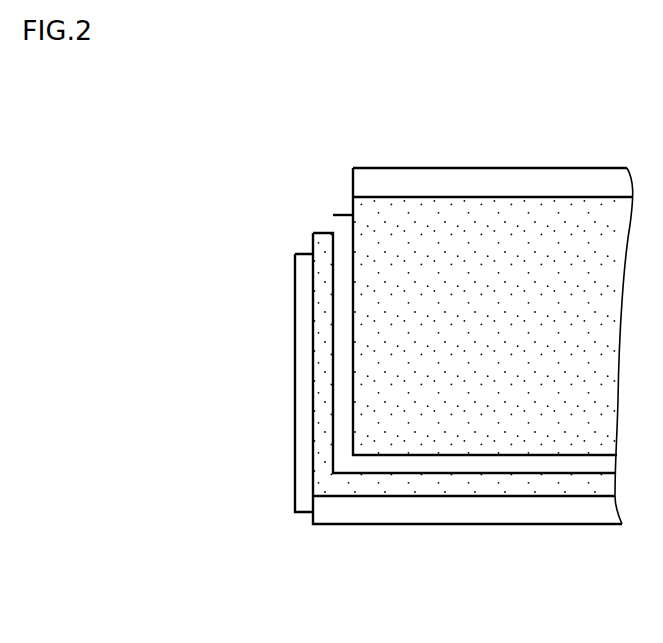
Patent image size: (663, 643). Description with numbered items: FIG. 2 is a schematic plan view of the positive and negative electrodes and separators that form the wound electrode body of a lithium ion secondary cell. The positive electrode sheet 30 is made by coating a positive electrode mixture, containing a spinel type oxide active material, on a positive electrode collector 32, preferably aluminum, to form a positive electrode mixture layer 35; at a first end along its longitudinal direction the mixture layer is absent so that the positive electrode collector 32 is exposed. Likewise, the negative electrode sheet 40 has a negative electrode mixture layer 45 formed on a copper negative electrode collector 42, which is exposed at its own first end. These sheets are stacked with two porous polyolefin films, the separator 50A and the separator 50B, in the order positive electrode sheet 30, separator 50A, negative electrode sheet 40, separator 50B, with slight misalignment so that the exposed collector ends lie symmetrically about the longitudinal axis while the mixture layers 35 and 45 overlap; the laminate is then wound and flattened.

The positive electrode sheet 30 is at (493, 294).
The positive electrode collector 32 is at (598, 176).
The positive electrode mixture layer 35 is at (399, 223).
The negative electrode sheet 40 is at (467, 421).
The negative electrode collector 42 is at (383, 511).
The negative electrode mixture layer 45 is at (542, 490).
The separator 50A is at (341, 213).
The separator 50B is at (302, 253).